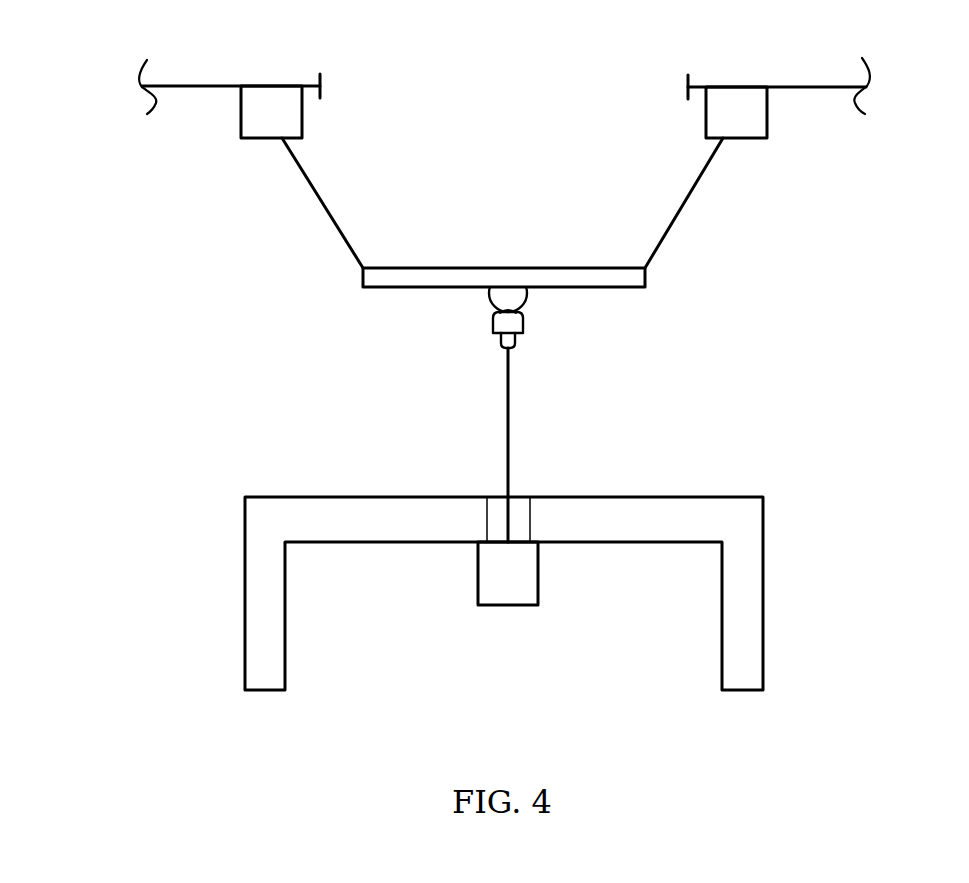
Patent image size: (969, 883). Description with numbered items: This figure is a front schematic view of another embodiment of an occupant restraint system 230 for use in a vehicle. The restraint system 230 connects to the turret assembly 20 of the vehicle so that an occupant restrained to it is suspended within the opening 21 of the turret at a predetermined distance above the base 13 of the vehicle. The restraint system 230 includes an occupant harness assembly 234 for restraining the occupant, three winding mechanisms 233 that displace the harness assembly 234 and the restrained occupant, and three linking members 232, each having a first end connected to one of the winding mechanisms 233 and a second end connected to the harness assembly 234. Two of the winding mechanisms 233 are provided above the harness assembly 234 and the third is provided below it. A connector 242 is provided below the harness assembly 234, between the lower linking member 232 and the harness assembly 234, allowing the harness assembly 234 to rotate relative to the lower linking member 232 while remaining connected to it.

The base 13 is at (320, 497).
The turret assembly 20 is at (201, 86).
The opening 21 is at (513, 95).
The occupant restraint system 230 is at (209, 372).
The linking member 232 is at (347, 242).
The winding mechanism 233 is at (259, 139).
The occupant harness assembly 234 is at (617, 288).
The connector 242 is at (489, 320).